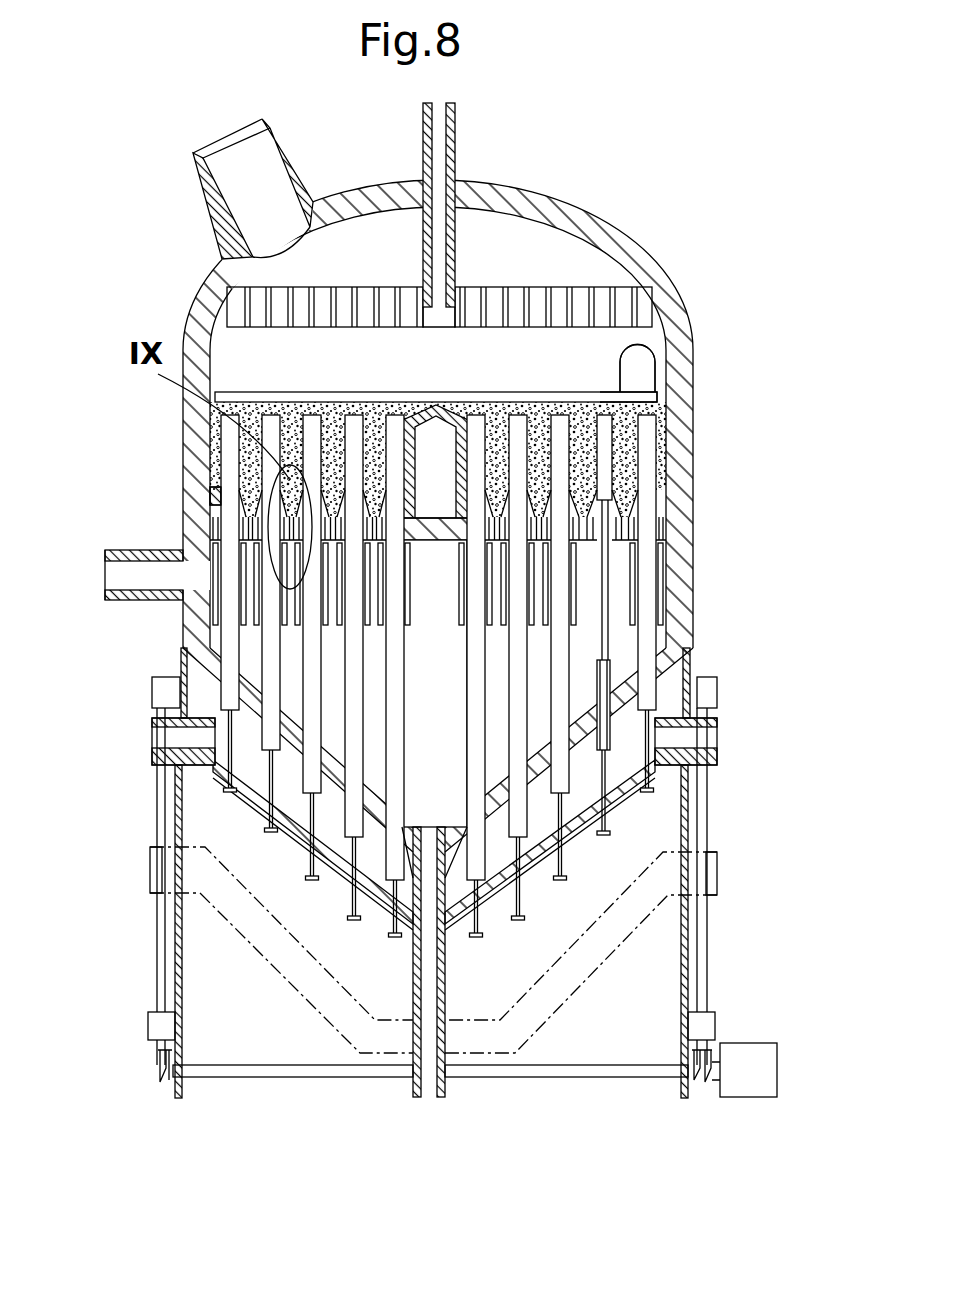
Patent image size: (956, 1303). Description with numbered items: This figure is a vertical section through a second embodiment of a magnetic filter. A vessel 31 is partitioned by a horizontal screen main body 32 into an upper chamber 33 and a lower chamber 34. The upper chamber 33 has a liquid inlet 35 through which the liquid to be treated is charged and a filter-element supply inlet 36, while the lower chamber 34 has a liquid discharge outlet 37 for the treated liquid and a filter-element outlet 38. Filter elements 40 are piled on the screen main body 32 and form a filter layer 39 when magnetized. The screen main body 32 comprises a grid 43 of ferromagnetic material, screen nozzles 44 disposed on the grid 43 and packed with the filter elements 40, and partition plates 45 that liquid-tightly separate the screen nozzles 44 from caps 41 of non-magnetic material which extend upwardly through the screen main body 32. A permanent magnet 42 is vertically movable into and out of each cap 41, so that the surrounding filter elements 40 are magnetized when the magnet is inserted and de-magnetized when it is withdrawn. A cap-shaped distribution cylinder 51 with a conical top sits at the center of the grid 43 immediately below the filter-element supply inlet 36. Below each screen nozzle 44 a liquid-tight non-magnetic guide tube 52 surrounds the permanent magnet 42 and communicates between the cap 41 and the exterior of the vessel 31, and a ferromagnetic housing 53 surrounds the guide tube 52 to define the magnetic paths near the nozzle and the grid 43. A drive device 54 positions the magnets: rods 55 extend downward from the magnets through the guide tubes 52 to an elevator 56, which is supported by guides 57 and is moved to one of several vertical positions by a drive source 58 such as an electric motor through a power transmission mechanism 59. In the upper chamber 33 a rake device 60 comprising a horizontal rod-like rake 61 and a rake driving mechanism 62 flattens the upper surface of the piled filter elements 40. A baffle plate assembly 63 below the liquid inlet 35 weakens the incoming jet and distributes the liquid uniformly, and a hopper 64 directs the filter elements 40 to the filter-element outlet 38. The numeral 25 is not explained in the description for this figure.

The support rods and feet 25 is at (605, 792).
The vessel 31 is at (565, 208).
The screen main body 32 is at (112, 452).
The upper chamber 33 is at (570, 249).
The lower chamber 34 is at (628, 645).
The liquid inlet 35 is at (293, 174).
The filter-element supply inlet 36 is at (456, 143).
The liquid discharge outlet 37 is at (130, 607).
The filter-element outlet 38 is at (413, 998).
The filter layer 39 is at (755, 398).
The filter elements 40 is at (670, 413).
The caps 41 is at (313, 428).
The permanent magnet 42 is at (606, 428).
The grid 43 is at (212, 535).
The screen nozzles 44 is at (212, 513).
The partition plates 45 is at (423, 540).
The cap-shaped distribution cylinder 51 is at (452, 415).
The guide tube 52 is at (400, 718).
The housing 53 is at (412, 612).
The drive device 54 is at (795, 715).
The rods 55 is at (660, 768).
The elevator 56 is at (716, 752).
The guides 57 is at (160, 965).
The drive source 58 is at (750, 1043).
The power transmission mechanism 59 is at (300, 1078).
The rake device 60 is at (755, 333).
The rake 61 is at (642, 392).
The rake driving mechanism 62 is at (650, 348).
The baffle plate assembly 63 is at (531, 287).
The hopper 64 is at (412, 840).